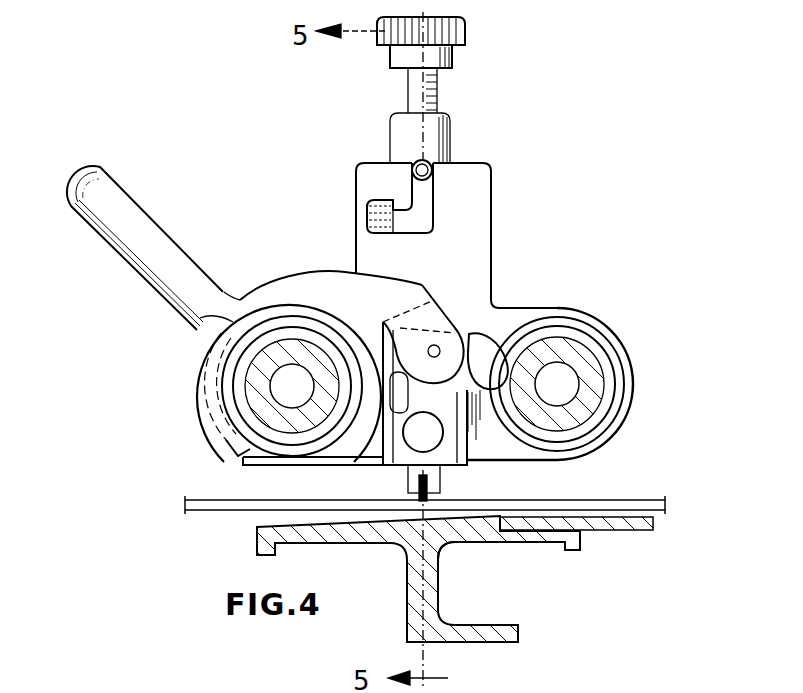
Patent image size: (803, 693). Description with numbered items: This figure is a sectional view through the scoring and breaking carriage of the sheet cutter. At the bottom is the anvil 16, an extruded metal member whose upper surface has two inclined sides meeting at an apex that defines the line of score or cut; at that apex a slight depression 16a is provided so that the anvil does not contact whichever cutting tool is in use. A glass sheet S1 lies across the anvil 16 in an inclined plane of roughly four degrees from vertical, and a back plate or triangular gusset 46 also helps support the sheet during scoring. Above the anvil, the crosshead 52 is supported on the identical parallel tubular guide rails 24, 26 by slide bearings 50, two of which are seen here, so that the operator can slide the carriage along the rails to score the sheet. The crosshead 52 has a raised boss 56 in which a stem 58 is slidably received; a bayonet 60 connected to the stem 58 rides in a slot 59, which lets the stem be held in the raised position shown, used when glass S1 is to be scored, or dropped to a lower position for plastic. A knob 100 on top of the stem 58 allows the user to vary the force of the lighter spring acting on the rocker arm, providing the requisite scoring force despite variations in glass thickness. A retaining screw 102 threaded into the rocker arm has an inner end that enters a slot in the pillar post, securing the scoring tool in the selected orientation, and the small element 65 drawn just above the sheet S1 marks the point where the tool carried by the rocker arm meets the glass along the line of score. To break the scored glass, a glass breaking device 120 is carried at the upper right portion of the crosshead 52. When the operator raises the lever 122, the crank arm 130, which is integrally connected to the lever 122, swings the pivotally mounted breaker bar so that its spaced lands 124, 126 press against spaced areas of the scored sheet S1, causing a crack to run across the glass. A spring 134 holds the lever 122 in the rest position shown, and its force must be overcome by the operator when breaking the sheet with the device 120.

The knob 100 is at (465, 30).
The stem 58 is at (392, 131).
The bayonet 60 is at (430, 166).
The raised boss 56 is at (491, 180).
The crosshead 52 is at (494, 307).
The slot 59 is at (431, 229).
The glass breaking device 120 is at (148, 222).
The lever 122 is at (163, 220).
The spring 134 is at (278, 290).
The crank arm 130 is at (445, 300).
The land 126 is at (520, 335).
The retaining screw 102 is at (430, 447).
The land 124 is at (396, 402).
The stud 65 is at (418, 492).
The guide rail 26 is at (248, 403).
The slide bearing 50 is at (610, 358).
The guide rail 24 is at (600, 395).
The glass sheet S1 is at (636, 500).
The anvil 16 is at (450, 577).
The depression 16a is at (410, 545).
The back plate or triangular gusset 46 is at (625, 531).